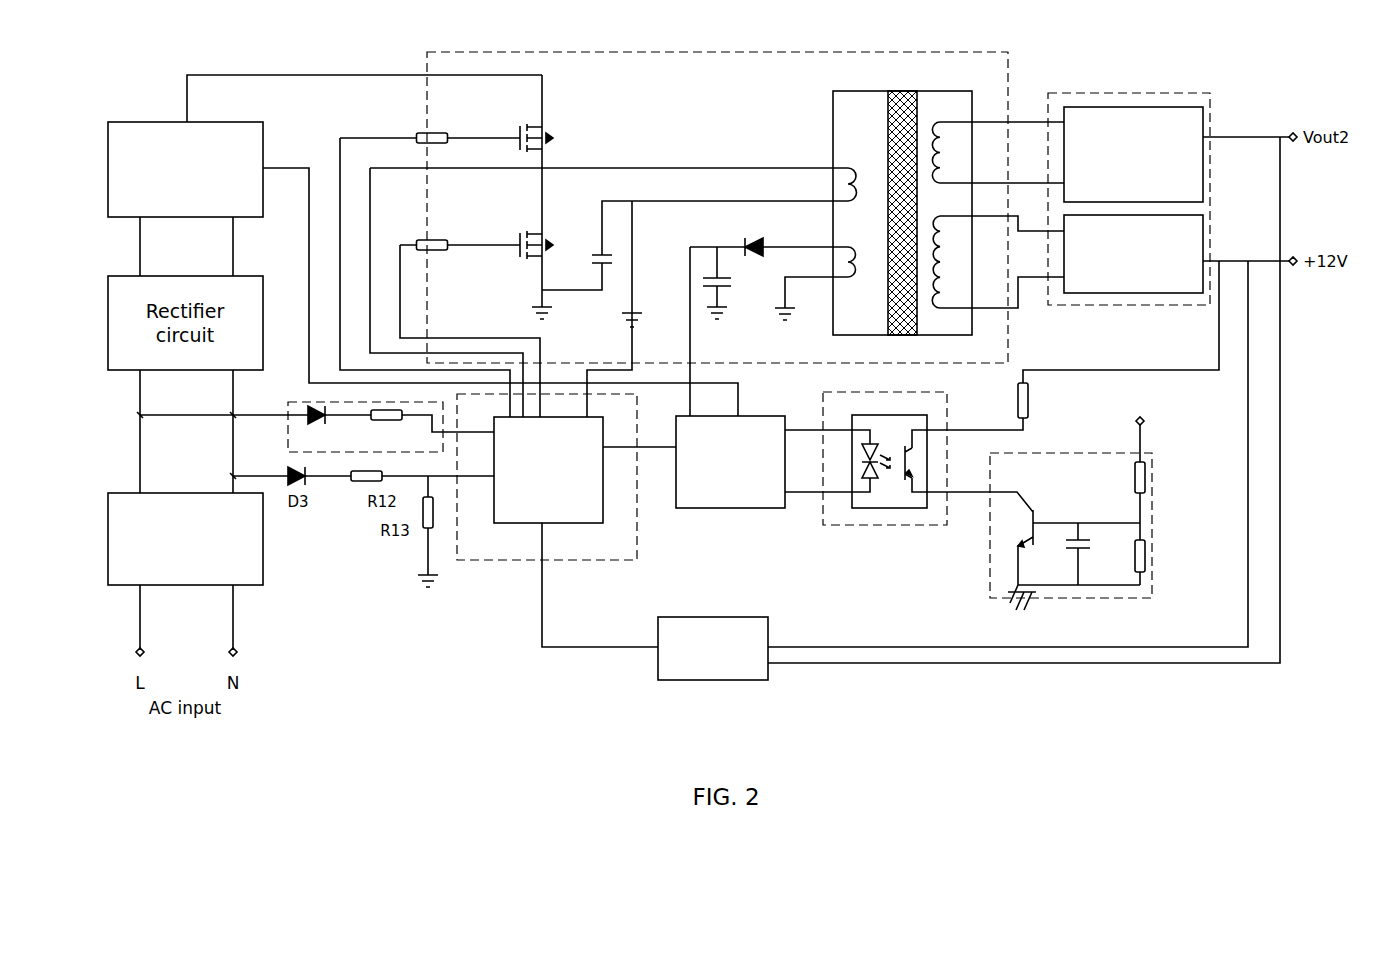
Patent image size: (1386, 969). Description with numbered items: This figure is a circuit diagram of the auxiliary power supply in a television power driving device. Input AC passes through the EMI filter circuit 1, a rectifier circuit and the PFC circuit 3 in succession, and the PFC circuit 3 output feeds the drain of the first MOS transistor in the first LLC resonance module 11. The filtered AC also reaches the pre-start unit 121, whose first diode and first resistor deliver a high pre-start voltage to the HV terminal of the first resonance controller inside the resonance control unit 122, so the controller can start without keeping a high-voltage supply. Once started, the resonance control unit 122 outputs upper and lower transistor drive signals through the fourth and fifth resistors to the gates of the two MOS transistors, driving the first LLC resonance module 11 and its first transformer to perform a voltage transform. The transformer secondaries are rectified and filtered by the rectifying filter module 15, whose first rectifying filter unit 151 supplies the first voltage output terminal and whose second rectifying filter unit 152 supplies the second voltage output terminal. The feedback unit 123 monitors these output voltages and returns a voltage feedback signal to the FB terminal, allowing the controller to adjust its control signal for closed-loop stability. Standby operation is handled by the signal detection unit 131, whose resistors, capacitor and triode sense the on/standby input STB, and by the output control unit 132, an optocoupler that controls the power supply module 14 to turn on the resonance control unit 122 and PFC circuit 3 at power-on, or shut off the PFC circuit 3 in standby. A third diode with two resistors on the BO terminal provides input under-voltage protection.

The EMI filter circuit 1 is at (265, 546).
The PFC circuit 3 is at (223, 118).
The first LLC resonance module 11 is at (725, 52).
The power supply module 14 is at (735, 510).
The rectifying filter module 15 is at (1130, 92).
The first rectifying filter unit 151 is at (1190, 106).
The second rectifying filter unit 152 is at (1213, 225).
The pre-start unit 121 is at (287, 440).
The resonance control unit 122 is at (567, 563).
The feedback unit 123 is at (720, 616).
The signal detection unit 131 is at (1072, 598).
The output control unit 132 is at (885, 527).